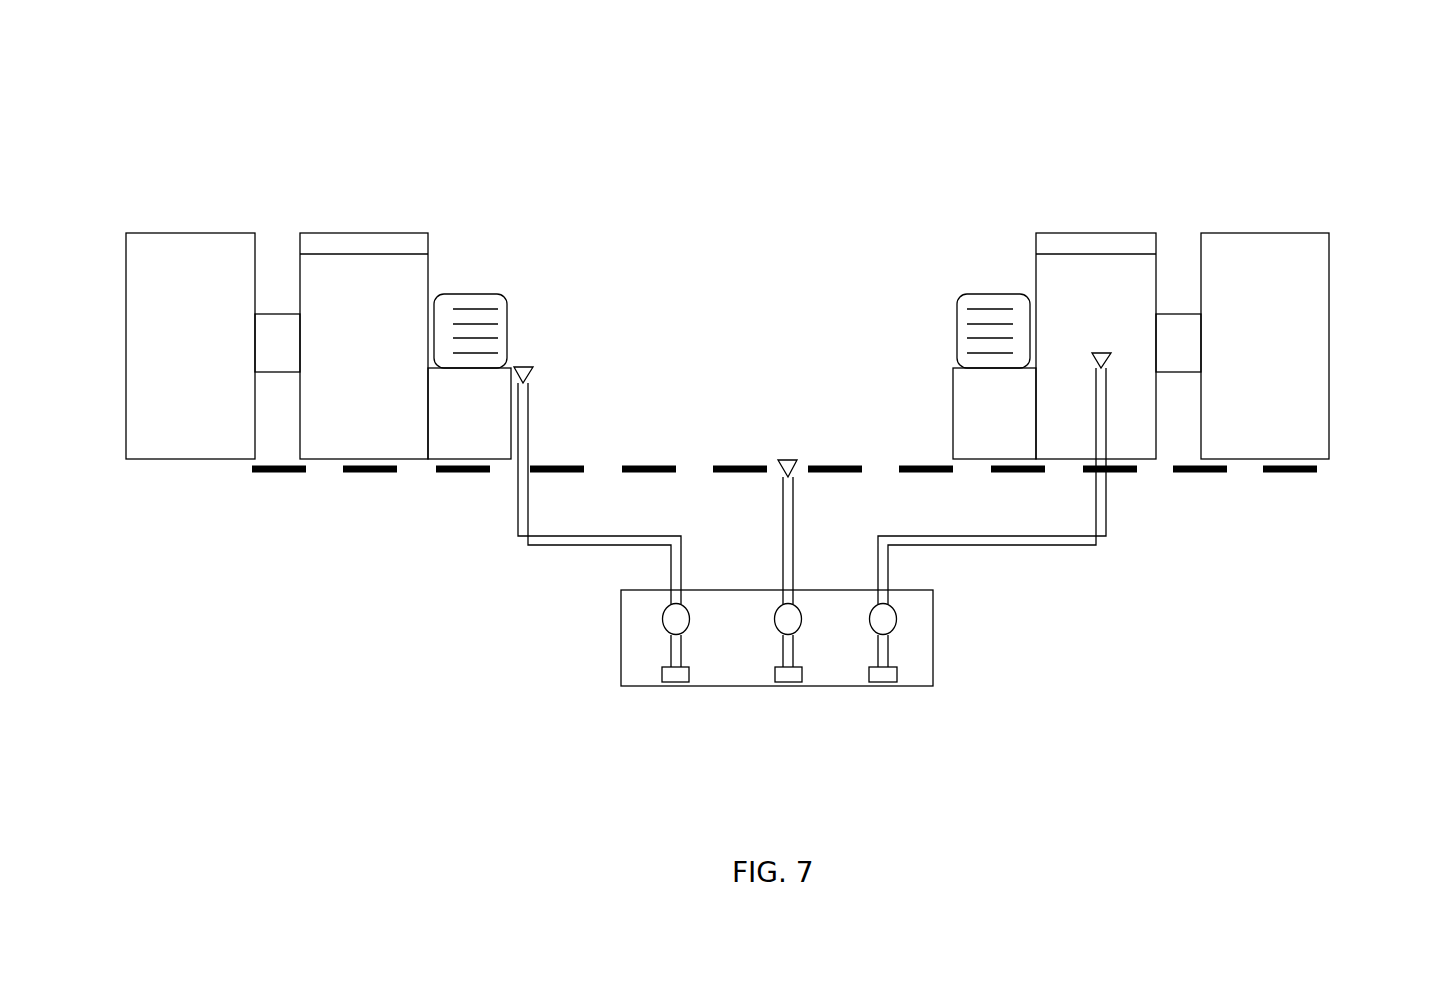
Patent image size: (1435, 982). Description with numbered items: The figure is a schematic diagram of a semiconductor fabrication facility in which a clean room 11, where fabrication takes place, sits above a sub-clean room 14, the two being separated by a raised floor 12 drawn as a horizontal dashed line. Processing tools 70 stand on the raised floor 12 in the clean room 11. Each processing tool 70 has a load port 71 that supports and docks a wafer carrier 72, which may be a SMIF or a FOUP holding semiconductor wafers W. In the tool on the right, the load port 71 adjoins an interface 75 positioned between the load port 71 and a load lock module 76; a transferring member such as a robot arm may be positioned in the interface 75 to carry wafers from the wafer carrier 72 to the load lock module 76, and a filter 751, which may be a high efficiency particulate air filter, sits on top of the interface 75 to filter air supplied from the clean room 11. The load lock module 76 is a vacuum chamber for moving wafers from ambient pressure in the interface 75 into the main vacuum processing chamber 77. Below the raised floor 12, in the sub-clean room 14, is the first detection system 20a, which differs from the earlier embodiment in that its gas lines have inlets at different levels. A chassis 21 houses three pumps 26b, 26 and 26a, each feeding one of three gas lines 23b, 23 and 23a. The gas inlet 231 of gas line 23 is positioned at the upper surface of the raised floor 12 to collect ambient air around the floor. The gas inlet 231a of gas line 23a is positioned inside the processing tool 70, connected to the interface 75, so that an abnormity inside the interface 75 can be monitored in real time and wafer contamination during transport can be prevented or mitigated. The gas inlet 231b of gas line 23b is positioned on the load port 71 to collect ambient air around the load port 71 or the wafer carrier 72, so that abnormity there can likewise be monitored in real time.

The processing tool 70 is at (250, 205).
The clean room 11 is at (864, 152).
The raised floor 12 is at (285, 472).
The sub-clean room 14 is at (365, 572).
The load port 71 is at (485, 423).
The wafer carrier 72 is at (456, 294).
The semiconductor wafer W is at (482, 323).
The gas inlet 231b is at (525, 367).
The gas inlet 231 is at (788, 460).
The gas inlet 231a is at (1102, 353).
The interface 75 is at (1053, 260).
The filter 751 is at (1073, 238).
The load lock module 76 is at (1173, 342).
The processing chamber 77 is at (1318, 327).
The gas line 23b is at (518, 535).
The gas line 23 is at (782, 525).
The gas line 23a is at (1106, 540).
The chassis 21 is at (622, 662).
The pump 26b is at (687, 628).
The pump 26 is at (798, 628).
The pump 26a is at (892, 628).
The first detection system 20a is at (953, 668).